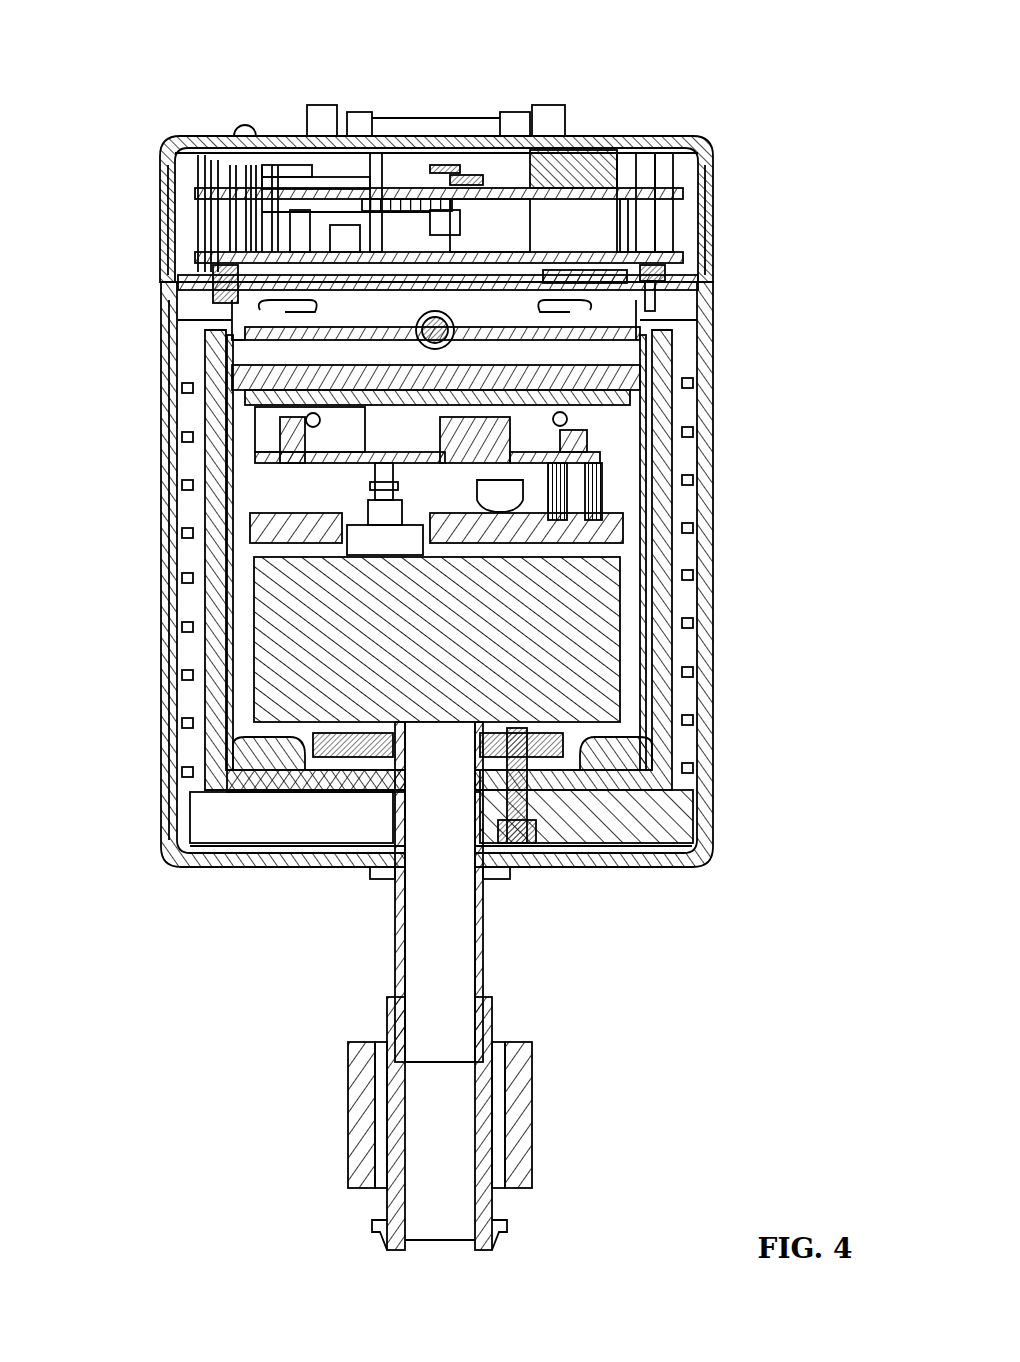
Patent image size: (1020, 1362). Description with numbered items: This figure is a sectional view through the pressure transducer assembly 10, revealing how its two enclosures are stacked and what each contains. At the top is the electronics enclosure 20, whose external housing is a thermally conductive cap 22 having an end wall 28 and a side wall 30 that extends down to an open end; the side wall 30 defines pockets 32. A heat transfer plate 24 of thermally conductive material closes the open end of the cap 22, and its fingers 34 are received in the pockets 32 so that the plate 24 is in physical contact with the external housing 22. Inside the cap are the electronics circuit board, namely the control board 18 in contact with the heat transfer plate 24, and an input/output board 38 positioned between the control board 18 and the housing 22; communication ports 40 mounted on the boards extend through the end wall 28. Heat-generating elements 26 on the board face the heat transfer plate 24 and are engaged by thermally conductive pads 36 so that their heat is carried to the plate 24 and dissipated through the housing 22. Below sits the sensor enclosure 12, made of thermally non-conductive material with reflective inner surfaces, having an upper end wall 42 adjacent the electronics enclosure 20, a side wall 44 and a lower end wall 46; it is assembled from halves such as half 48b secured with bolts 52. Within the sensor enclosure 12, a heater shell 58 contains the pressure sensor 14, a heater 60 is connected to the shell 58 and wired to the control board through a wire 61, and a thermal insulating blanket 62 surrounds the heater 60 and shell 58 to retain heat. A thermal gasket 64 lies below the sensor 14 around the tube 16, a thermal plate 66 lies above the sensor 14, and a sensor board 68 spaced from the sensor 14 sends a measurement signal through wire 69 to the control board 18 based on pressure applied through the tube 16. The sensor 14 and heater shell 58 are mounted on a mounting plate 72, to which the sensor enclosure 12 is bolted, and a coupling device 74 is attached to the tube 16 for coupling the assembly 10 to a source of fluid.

The pressure transducer assembly 10 is at (835, 138).
The sensor enclosure 12 is at (732, 598).
The pressure sensor 14 is at (610, 666).
The tube 16 is at (485, 964).
The electronics circuit board 18 is at (690, 260).
The electronics enclosure 20 is at (717, 134).
The external housing 22 is at (154, 188).
The heat transfer plate 24 is at (520, 278).
The heat-generating elements 26 is at (468, 268).
The end wall 28 is at (203, 150).
The side wall 30 is at (205, 226).
The pockets 32 is at (665, 218).
The fingers 34 is at (692, 190).
The thermally conductive pads 36 is at (700, 277).
The input/output board 38 is at (632, 202).
The communication port 40 is at (422, 122).
The upper end wall 42 is at (505, 338).
The side wall 44 is at (716, 512).
The lower end wall 46 is at (650, 858).
The half 48b is at (722, 830).
The bolts 52 is at (425, 338).
The heater shell 58 is at (240, 682).
The heater 60 is at (648, 462).
The wire 61 is at (650, 362).
The thermal insulating blanket 62 is at (238, 386).
The thermal gasket 64 is at (345, 748).
The thermal plate 66 is at (625, 502).
The sensor board 68 is at (605, 456).
The wire 69 is at (232, 380).
The mounting plate 72 is at (600, 832).
The coupling device 74 is at (525, 1142).